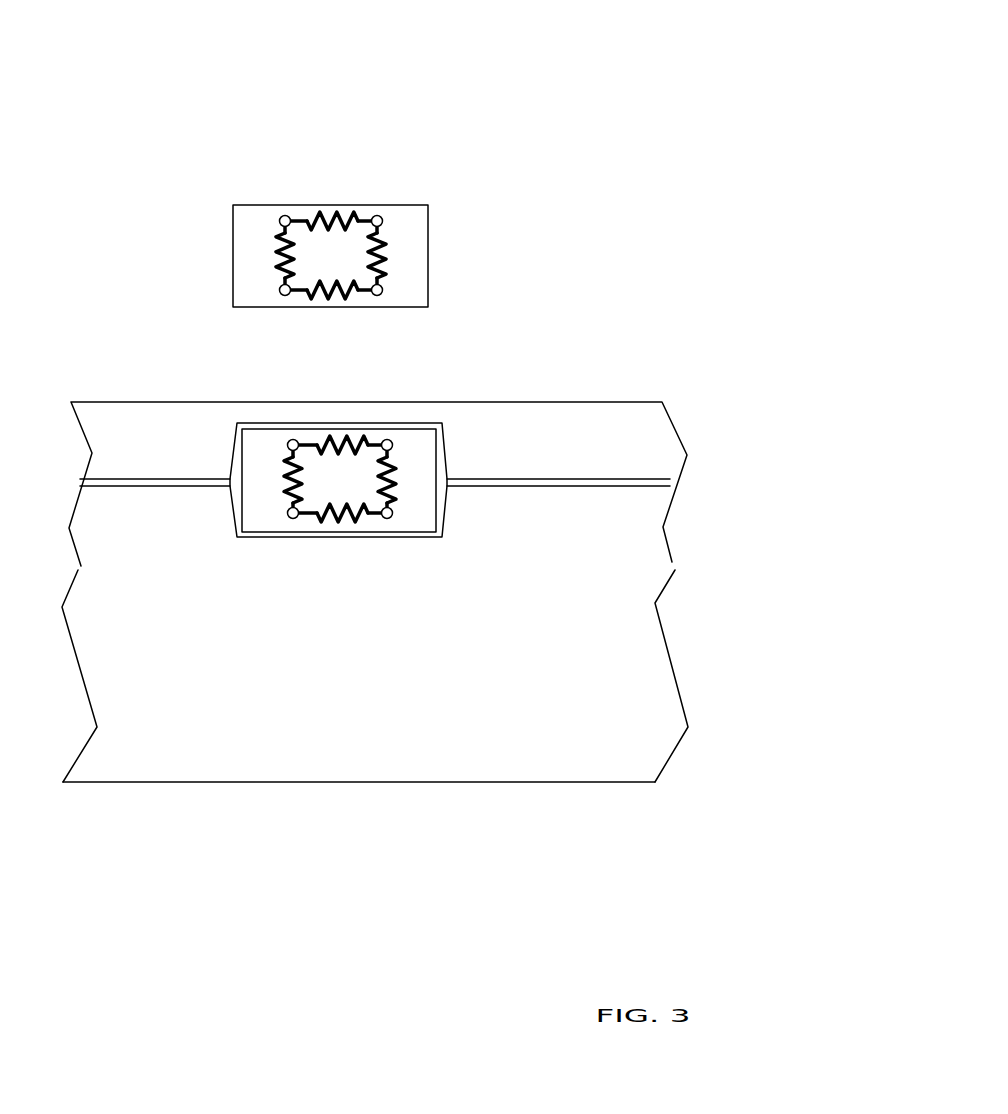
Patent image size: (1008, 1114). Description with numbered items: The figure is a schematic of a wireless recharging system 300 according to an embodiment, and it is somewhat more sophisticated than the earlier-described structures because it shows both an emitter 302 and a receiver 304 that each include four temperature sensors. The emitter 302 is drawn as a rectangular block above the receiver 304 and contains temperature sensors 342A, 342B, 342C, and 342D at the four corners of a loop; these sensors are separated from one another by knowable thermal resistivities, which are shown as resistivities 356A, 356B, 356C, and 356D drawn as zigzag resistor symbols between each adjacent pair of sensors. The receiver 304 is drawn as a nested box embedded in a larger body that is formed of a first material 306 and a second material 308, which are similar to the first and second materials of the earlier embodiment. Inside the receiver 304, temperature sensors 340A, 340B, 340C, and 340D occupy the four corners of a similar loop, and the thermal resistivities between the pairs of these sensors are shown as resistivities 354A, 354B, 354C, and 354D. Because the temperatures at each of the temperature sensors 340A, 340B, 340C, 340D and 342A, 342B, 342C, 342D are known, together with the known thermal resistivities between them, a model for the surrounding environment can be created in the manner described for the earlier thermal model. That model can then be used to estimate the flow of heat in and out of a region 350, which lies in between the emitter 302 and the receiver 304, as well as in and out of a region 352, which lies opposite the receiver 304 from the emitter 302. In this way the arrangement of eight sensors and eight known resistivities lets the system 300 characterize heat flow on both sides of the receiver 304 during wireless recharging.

The sensor assembly 300 is at (667, 88).
The emitter 302 is at (435, 212).
The temperature sensor 342A is at (384, 291).
The temperature sensor 342B is at (379, 215).
The temperature sensor 342C is at (284, 215).
The temperature sensor 342D is at (278, 291).
The resistivity 356A is at (337, 302).
The resistivity 356B is at (387, 252).
The resistivity 356C is at (350, 208).
The resistivity 356D is at (275, 250).
The region 350 is at (383, 358).
The receiver 304 is at (253, 520).
The first material 306 is at (643, 432).
The second material 308 is at (660, 690).
The region 352 is at (347, 652).
The temperature sensor 340A is at (295, 519).
The temperature sensor 340B is at (386, 519).
The temperature sensor 340C is at (386, 439).
The temperature sensor 340D is at (291, 439).
The resistivity 354A is at (338, 525).
The resistivity 354B is at (397, 477).
The resistivity 354C is at (337, 438).
The resistivity 354D is at (280, 473).